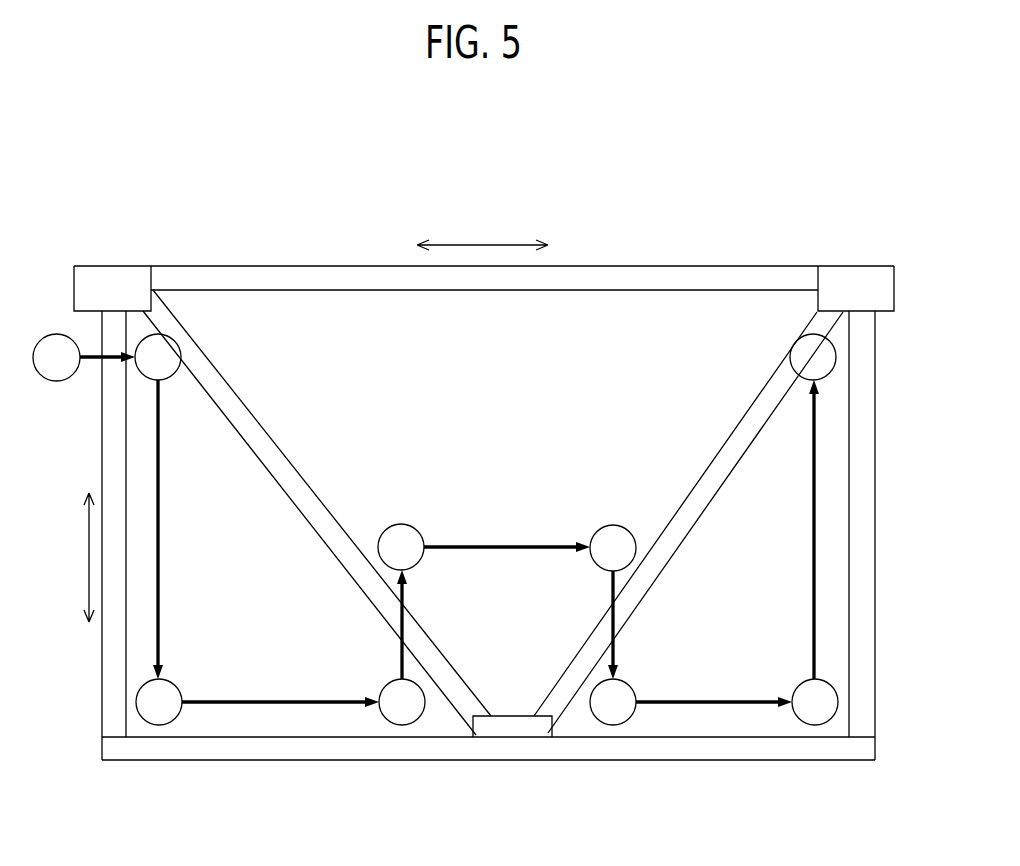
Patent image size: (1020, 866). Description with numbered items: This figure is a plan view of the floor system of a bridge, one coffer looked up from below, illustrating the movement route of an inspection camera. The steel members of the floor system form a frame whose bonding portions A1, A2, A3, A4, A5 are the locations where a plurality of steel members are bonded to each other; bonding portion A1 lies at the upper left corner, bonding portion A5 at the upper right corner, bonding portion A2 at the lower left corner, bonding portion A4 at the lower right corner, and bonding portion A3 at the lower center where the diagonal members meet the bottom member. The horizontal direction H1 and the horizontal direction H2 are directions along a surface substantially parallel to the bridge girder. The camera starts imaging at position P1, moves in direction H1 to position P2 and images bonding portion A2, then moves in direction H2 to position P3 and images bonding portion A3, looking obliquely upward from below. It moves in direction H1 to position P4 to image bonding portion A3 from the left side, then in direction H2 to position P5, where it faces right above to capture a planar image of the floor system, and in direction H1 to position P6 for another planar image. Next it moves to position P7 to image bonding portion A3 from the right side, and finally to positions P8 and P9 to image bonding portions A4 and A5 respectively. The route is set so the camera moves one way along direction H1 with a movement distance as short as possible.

The bonding portion A1 is at (119, 246).
The bonding portion A2 is at (108, 782).
The bonding portion A3 is at (488, 782).
The bonding portion A4 is at (869, 784).
The bonding portion A5 is at (861, 246).
The direction H1 is at (482, 230).
The direction H2 is at (73, 557).
The position P1 is at (84, 357).
The position P2 is at (158, 506).
The position P3 is at (257, 702).
The position P4 is at (402, 647).
The position P5 is at (484, 547).
The position P6 is at (613, 602).
The position P7 is at (691, 702).
The position P8 is at (815, 552).
The position P9 is at (813, 357).